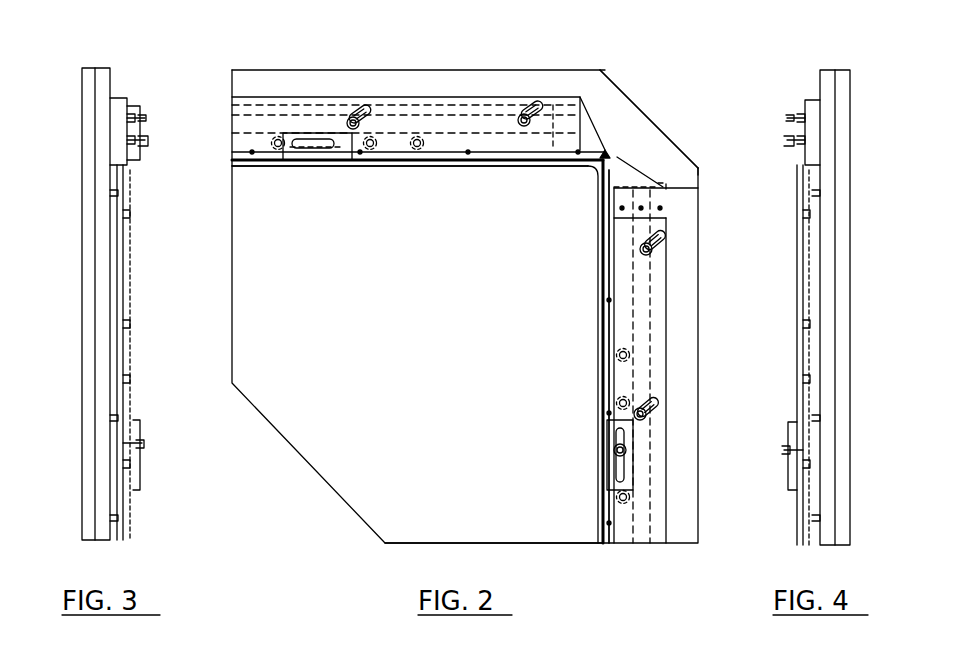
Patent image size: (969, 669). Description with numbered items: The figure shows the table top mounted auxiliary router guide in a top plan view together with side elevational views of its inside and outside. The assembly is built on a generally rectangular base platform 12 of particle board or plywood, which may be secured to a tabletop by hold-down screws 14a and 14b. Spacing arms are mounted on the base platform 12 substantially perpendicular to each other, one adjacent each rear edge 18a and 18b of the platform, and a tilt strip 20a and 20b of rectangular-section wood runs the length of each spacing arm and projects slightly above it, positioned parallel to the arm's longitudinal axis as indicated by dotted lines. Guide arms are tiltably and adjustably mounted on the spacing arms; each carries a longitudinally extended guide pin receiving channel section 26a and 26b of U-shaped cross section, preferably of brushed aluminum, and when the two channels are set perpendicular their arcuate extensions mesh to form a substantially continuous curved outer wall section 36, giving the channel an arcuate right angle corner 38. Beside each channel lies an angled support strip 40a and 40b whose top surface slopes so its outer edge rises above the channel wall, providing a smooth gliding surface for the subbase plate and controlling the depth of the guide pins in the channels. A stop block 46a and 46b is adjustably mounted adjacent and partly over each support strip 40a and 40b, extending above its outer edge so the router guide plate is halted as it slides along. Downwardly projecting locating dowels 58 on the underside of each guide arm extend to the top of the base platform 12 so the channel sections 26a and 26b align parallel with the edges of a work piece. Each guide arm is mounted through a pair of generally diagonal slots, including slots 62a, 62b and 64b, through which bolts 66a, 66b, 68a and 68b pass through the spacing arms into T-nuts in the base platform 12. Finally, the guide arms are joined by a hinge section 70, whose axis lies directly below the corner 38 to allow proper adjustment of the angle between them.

In FIG. 3, the base platform 12 is at (85, 425).
In FIG. 4, the base platform 12 is at (845, 385).
In FIG. 2, the hold-down screw 14a is at (368, 403).
In FIG. 2, the hold-down screw 14b is at (538, 228).
In FIG. 2, the rear edge 18a is at (417, 70).
In FIG. 2, the rear edge 18b is at (698, 370).
In FIG. 2, the tilt strip 20a is at (590, 108).
In FIG. 2, the tilt strip 20b is at (692, 198).
In FIG. 2, the channel section 26a is at (372, 162).
In FIG. 2, the channel section 26b is at (602, 375).
In FIG. 2, the curved outer wall section 36 is at (633, 178).
In FIG. 2, the arcuate right angle corner 38 is at (606, 149).
In FIG. 2, the angled support strip 40a is at (400, 166).
In FIG. 2, the angled support strip 40b is at (604, 407).
In FIG. 3, the stop block 46a is at (137, 127).
In FIG. 4, the stop block 46a is at (788, 138).
In FIG. 3, the stop block 46b is at (140, 478).
In FIG. 4, the stop block 46b is at (790, 425).
In FIG. 3, the locating dowel 58 is at (100, 292).
In FIG. 2, the diagonal slot 62a is at (362, 110).
In FIG. 2, the diagonal slot 62b is at (533, 104).
In FIG. 2, the diagonal slot 64b is at (660, 237).
In FIG. 2, the bolt 66a is at (348, 122).
In FIG. 2, the bolt 66b is at (520, 116).
In FIG. 2, the bolt 68a is at (645, 420).
In FIG. 2, the bolt 68b is at (652, 251).
In FIG. 2, the hinge section 70 is at (647, 172).